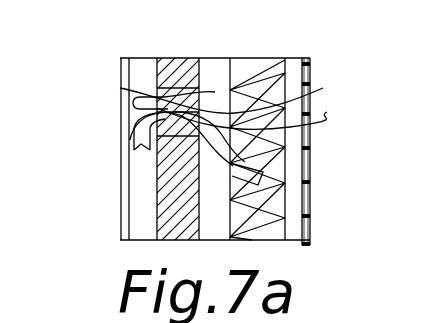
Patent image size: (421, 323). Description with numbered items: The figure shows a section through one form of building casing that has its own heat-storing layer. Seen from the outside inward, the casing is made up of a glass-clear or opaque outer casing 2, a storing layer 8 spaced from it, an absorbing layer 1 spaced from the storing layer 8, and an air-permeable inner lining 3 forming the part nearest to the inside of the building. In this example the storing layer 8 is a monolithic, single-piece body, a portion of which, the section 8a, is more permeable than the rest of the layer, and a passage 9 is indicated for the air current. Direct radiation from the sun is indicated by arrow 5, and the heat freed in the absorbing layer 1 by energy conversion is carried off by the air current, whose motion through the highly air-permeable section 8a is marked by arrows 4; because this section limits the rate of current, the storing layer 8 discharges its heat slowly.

The absorbing layer 1 is at (255, 73).
The outer casing 2 is at (120, 113).
The air-permeable inner lining 3 is at (307, 206).
The arrows 4 is at (120, 138).
The arrow 5 is at (136, 209).
The storing layer 8 is at (170, 234).
The section 8a is at (195, 87).
The passage 9 is at (119, 92).